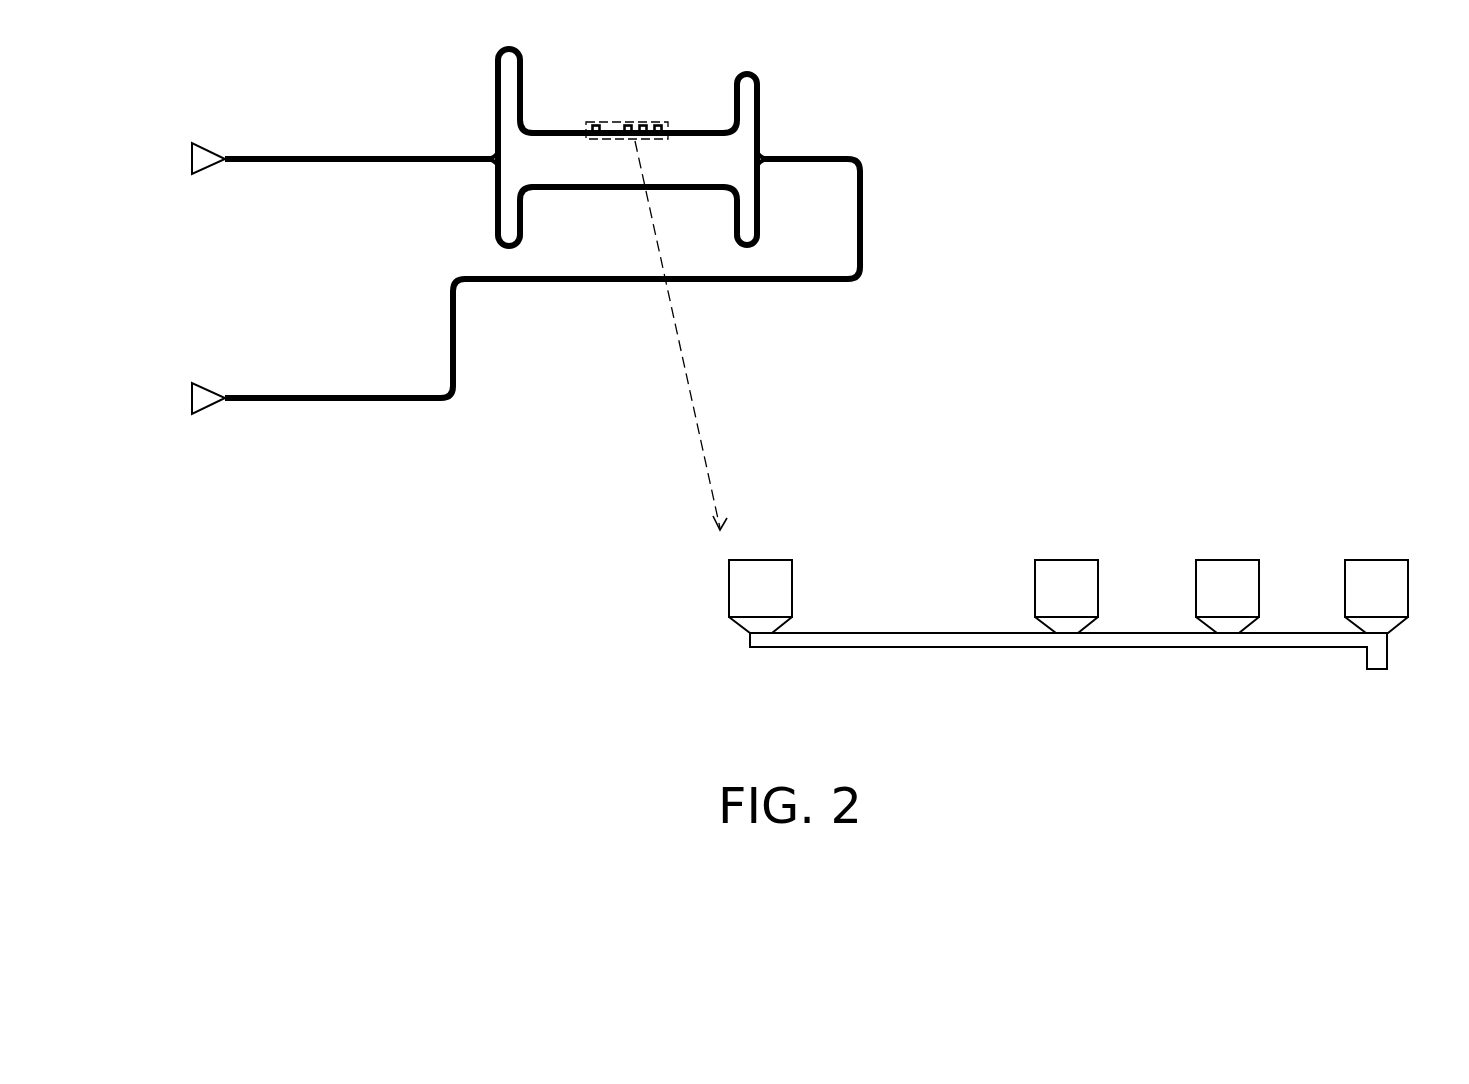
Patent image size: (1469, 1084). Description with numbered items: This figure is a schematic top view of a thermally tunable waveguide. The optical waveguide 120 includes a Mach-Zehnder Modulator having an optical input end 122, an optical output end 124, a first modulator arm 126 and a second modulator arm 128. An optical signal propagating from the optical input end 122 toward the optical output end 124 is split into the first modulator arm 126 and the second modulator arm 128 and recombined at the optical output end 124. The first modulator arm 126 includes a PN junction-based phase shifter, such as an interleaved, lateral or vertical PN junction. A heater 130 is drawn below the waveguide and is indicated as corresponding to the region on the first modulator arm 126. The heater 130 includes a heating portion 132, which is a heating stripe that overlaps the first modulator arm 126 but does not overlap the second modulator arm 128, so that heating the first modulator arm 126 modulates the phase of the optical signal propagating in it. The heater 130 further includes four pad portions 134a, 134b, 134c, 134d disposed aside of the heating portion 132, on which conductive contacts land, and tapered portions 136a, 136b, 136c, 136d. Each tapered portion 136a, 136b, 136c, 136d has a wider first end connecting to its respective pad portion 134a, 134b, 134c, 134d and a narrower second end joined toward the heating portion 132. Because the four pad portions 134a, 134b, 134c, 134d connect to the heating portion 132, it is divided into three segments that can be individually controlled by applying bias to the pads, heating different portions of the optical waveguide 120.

The optical waveguide 120 is at (870, 355).
The optical input end 122 is at (191, 156).
The optical output end 124 is at (191, 396).
The first modulator arm 126 is at (567, 128).
The second modulator arm 128 is at (586, 191).
The heater 130 is at (1023, 415).
The heating portion 132 is at (1145, 641).
The pad portion 134a is at (765, 575).
The pad portion 134b is at (1071, 575).
The pad portion 134c is at (1233, 575).
The pad portion 134d is at (1375, 575).
The tapered portion 136a is at (775, 634).
The tapered portion 136b is at (1043, 634).
The tapered portion 136c is at (1245, 634).
The tapered portion 136d is at (1393, 634).